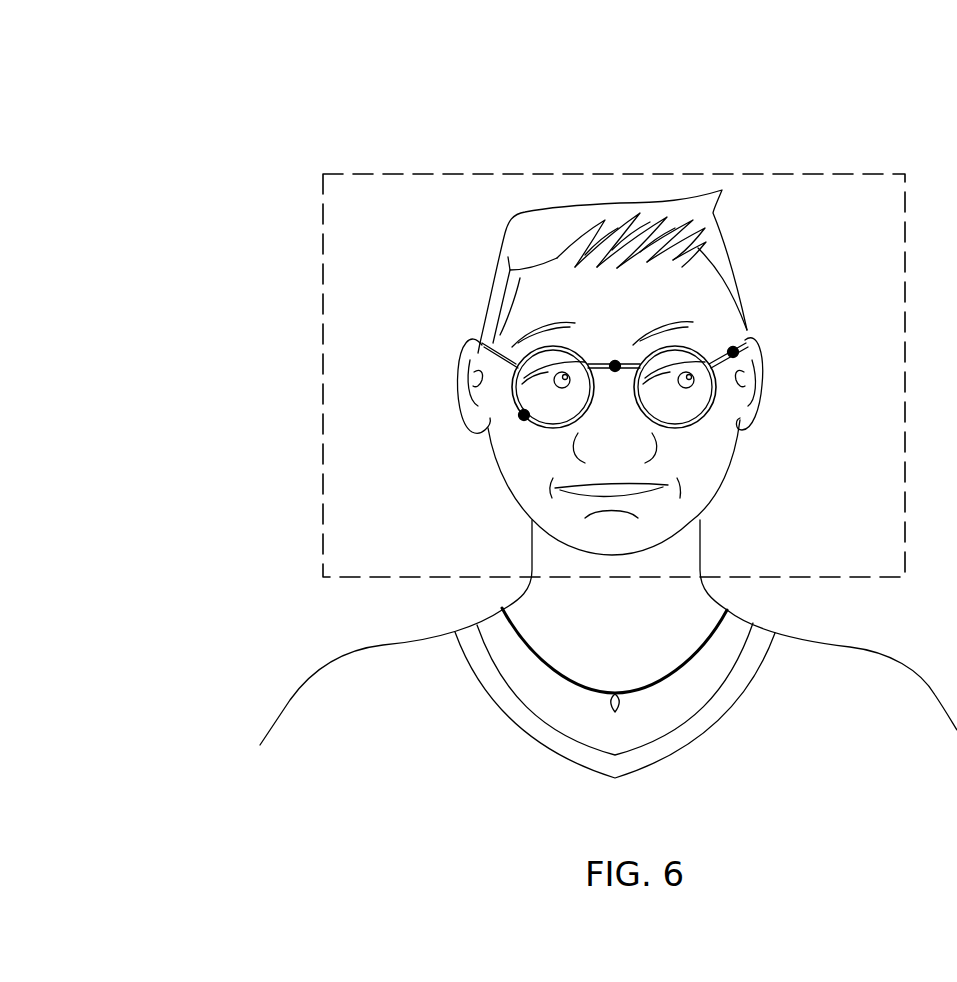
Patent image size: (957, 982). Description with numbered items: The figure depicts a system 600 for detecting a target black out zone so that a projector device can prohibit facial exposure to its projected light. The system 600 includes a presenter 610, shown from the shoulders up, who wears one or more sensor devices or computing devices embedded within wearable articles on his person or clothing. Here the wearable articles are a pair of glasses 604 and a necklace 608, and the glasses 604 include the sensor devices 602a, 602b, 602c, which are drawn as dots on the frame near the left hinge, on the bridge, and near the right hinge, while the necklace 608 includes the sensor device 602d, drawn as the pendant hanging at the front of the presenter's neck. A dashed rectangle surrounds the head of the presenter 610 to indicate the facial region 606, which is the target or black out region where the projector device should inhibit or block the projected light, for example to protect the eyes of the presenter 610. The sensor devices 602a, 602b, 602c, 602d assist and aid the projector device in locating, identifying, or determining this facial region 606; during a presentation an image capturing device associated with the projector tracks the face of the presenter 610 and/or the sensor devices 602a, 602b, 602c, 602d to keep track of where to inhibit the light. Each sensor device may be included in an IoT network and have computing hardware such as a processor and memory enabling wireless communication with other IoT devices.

The system 600 is at (233, 106).
The sensor device 602a is at (522, 418).
The sensor device 602b is at (615, 362).
The sensor device 602c is at (738, 351).
The sensor device 602d is at (625, 700).
The pair of glasses 604 is at (692, 430).
The facial region 606 is at (320, 225).
The necklace 608 is at (737, 628).
The presenter 610 is at (632, 626).